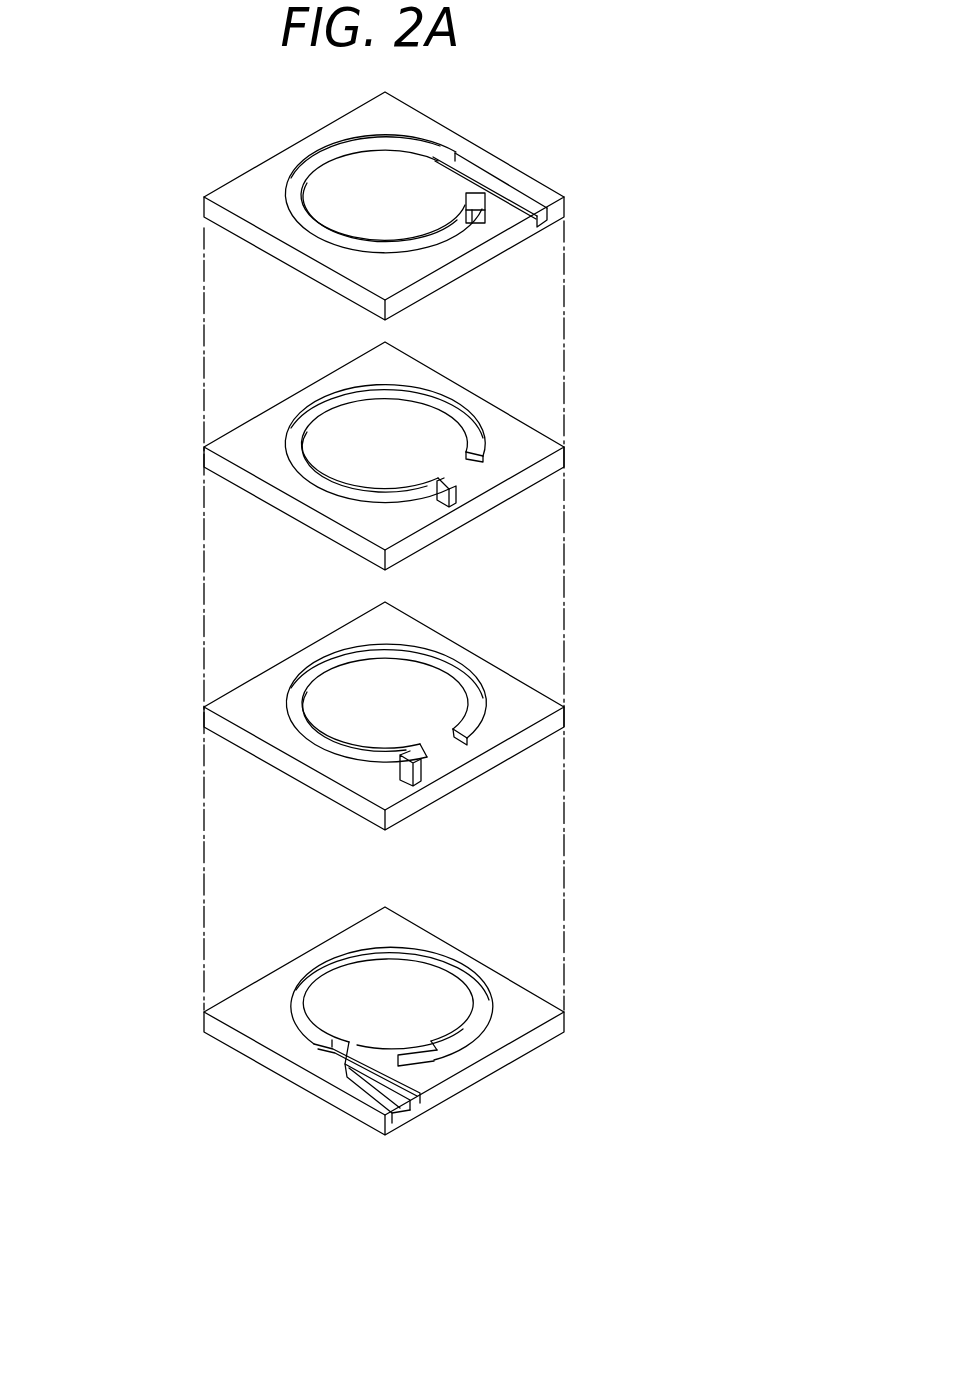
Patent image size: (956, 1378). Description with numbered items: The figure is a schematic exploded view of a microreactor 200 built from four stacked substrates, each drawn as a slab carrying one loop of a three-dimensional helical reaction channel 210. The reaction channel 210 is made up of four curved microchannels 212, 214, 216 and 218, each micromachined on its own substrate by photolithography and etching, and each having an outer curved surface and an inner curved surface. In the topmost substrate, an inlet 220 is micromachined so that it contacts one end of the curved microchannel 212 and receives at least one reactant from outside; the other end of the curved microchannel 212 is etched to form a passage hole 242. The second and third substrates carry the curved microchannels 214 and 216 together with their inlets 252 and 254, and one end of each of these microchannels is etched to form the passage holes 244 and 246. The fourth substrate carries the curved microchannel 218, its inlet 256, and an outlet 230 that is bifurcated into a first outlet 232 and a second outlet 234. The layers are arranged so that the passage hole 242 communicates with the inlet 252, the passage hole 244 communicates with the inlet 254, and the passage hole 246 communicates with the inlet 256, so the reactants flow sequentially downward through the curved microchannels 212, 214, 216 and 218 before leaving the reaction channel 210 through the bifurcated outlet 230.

The microreactor 200 is at (432, 95).
The 3-dimensional helical reaction channel 210 is at (115, 1013).
The curved microchannel 212 is at (274, 203).
The curved microchannel 214 is at (274, 454).
The curved microchannel 216 is at (274, 713).
The curved microchannel 218 is at (274, 1017).
The inlet 220 is at (550, 228).
The bifurcated outlet 230 is at (435, 1193).
The first outlet 232 is at (423, 1102).
The second outlet 234 is at (408, 1122).
The passage hole 242 is at (486, 214).
The passage hole 244 is at (437, 497).
The passage hole 246 is at (415, 770).
The inlet 252 is at (477, 452).
The inlet 254 is at (452, 745).
The inlet 256 is at (430, 1054).